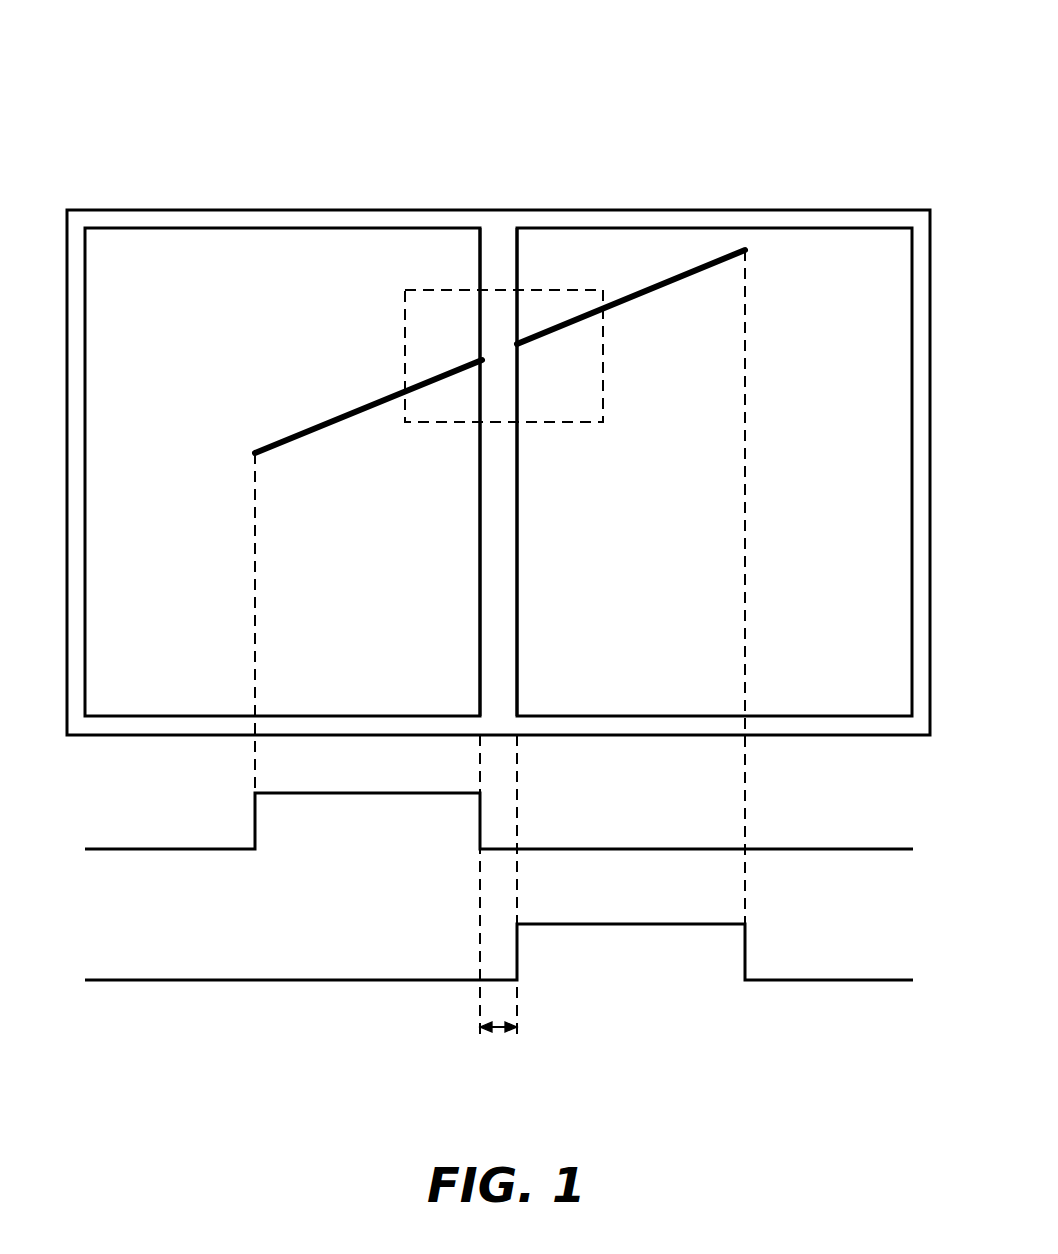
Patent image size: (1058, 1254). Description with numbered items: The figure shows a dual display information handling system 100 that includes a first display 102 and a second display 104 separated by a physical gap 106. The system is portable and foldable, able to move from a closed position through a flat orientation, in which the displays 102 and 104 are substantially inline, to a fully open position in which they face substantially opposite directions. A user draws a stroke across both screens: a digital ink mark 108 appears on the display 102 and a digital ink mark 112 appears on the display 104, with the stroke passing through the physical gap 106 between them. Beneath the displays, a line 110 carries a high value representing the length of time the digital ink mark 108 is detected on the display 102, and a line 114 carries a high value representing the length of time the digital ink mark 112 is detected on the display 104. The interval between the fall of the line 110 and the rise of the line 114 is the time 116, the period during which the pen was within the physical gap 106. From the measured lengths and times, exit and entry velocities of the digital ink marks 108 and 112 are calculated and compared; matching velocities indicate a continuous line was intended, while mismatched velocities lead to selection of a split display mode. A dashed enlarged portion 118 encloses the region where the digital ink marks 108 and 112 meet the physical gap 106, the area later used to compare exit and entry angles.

The dual display information handling system 100 is at (775, 62).
The display 102 is at (222, 250).
The display 104 is at (768, 257).
The physical gap 106 is at (518, 198).
The digital ink mark 108 is at (263, 447).
The line 110 is at (185, 847).
The digital ink mark 112 is at (635, 298).
The line 114 is at (232, 978).
The time 116 is at (498, 1031).
The enlarged portion 118 is at (430, 288).